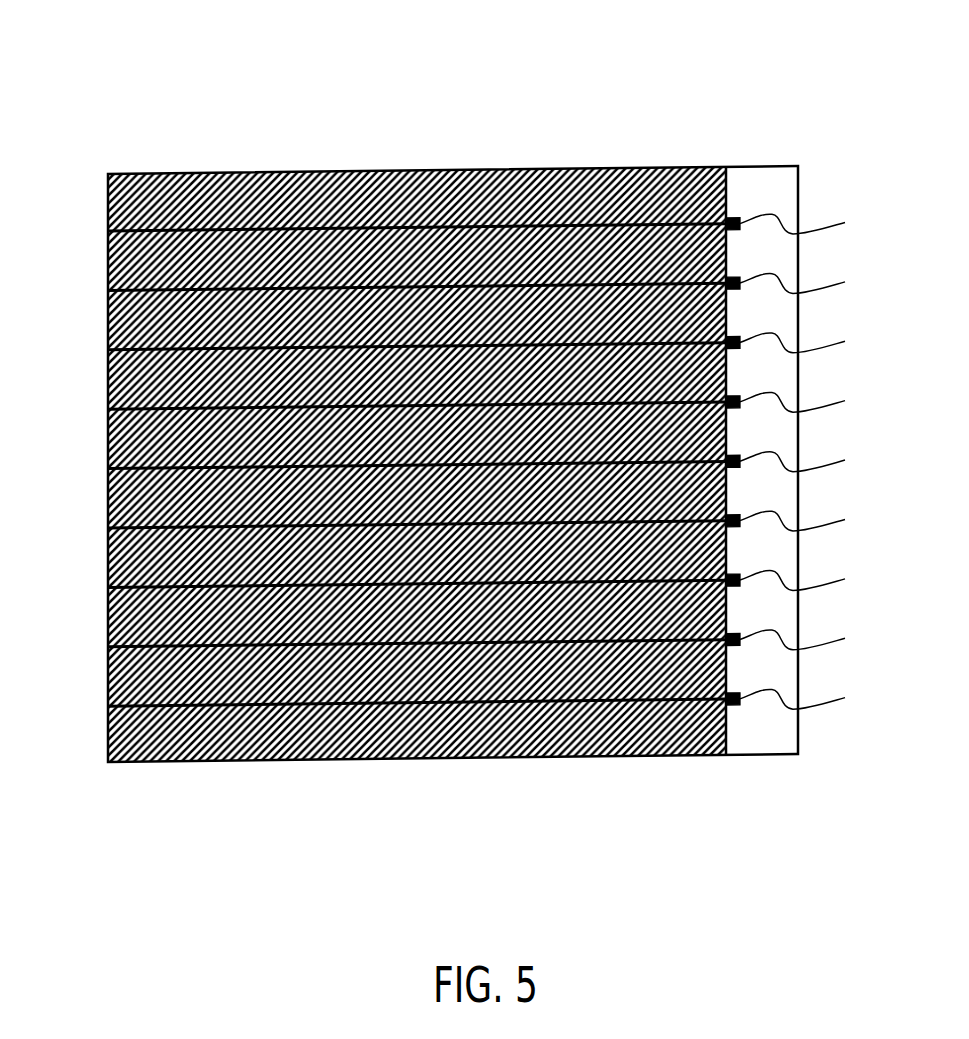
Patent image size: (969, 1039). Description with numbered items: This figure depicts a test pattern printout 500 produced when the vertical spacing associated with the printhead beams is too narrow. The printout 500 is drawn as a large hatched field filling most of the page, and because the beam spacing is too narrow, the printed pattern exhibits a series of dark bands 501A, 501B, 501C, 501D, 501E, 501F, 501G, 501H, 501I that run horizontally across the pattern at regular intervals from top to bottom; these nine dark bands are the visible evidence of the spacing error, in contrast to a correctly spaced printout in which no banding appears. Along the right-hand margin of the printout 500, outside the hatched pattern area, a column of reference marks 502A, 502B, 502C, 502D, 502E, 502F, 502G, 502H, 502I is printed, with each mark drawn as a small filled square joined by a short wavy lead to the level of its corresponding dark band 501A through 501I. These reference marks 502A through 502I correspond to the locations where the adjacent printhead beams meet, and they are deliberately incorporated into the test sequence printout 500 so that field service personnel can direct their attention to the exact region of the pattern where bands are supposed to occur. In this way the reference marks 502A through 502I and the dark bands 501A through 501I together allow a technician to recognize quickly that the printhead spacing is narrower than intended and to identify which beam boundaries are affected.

The test pattern printout 500 is at (493, 91).
The dark band 501A is at (113, 230).
The dark band 501B is at (113, 289).
The dark band 501C is at (113, 349).
The dark band 501D is at (113, 408).
The dark band 501E is at (113, 468).
The dark band 501F is at (113, 527).
The dark band 501G is at (113, 586).
The dark band 501H is at (113, 646).
The dark band 501I is at (113, 705).
The reference mark 502A is at (812, 225).
The reference mark 502B is at (812, 285).
The reference mark 502C is at (812, 344).
The reference mark 502D is at (812, 404).
The reference mark 502E is at (812, 463).
The reference mark 502F is at (812, 522).
The reference mark 502G is at (812, 582).
The reference mark 502H is at (812, 641).
The reference mark 502I is at (810, 701).